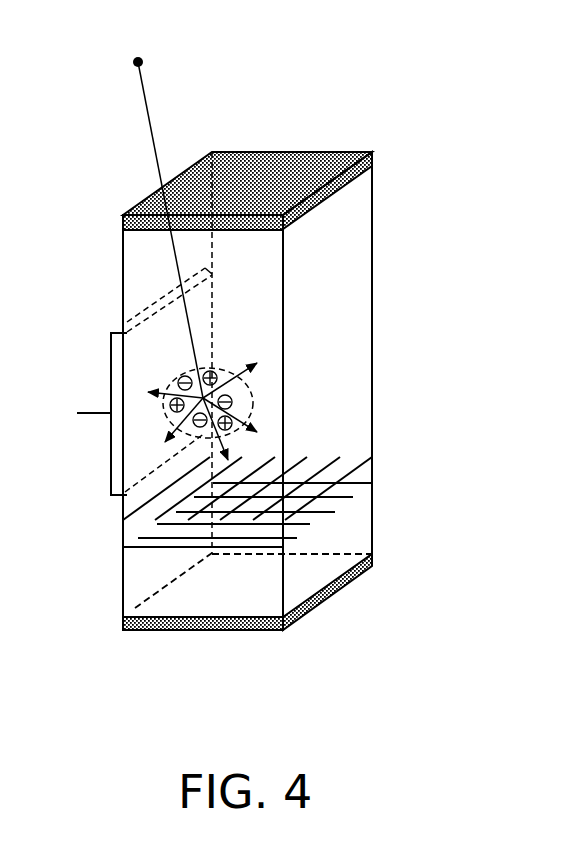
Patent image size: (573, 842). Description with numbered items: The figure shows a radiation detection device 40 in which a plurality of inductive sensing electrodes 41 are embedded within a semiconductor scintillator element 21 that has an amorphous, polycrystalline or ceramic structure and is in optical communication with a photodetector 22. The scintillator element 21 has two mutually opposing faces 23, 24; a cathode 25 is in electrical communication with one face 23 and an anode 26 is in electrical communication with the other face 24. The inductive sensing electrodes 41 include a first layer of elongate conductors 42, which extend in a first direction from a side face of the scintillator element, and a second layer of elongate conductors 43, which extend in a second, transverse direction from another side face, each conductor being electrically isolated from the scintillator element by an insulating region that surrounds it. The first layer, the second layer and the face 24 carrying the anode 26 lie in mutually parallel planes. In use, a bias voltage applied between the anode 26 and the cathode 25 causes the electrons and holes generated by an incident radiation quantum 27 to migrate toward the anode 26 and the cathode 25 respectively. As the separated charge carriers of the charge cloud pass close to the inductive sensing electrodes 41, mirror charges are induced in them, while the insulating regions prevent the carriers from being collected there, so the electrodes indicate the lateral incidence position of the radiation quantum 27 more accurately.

The semiconductor scintillator element 21 is at (128, 292).
The photodetector 22 is at (115, 360).
The scintillator element face 23 is at (352, 180).
The scintillator element face 24 is at (138, 610).
The cathode 25 is at (272, 162).
The anode 26 is at (205, 632).
The radiation quantum 27 is at (128, 63).
The radiation detection device 40 is at (430, 80).
The inductive sensing electrodes 41 is at (397, 448).
The first layer of elongate conductors 42 is at (273, 455).
The second layer of elongate conductors 43 is at (310, 523).